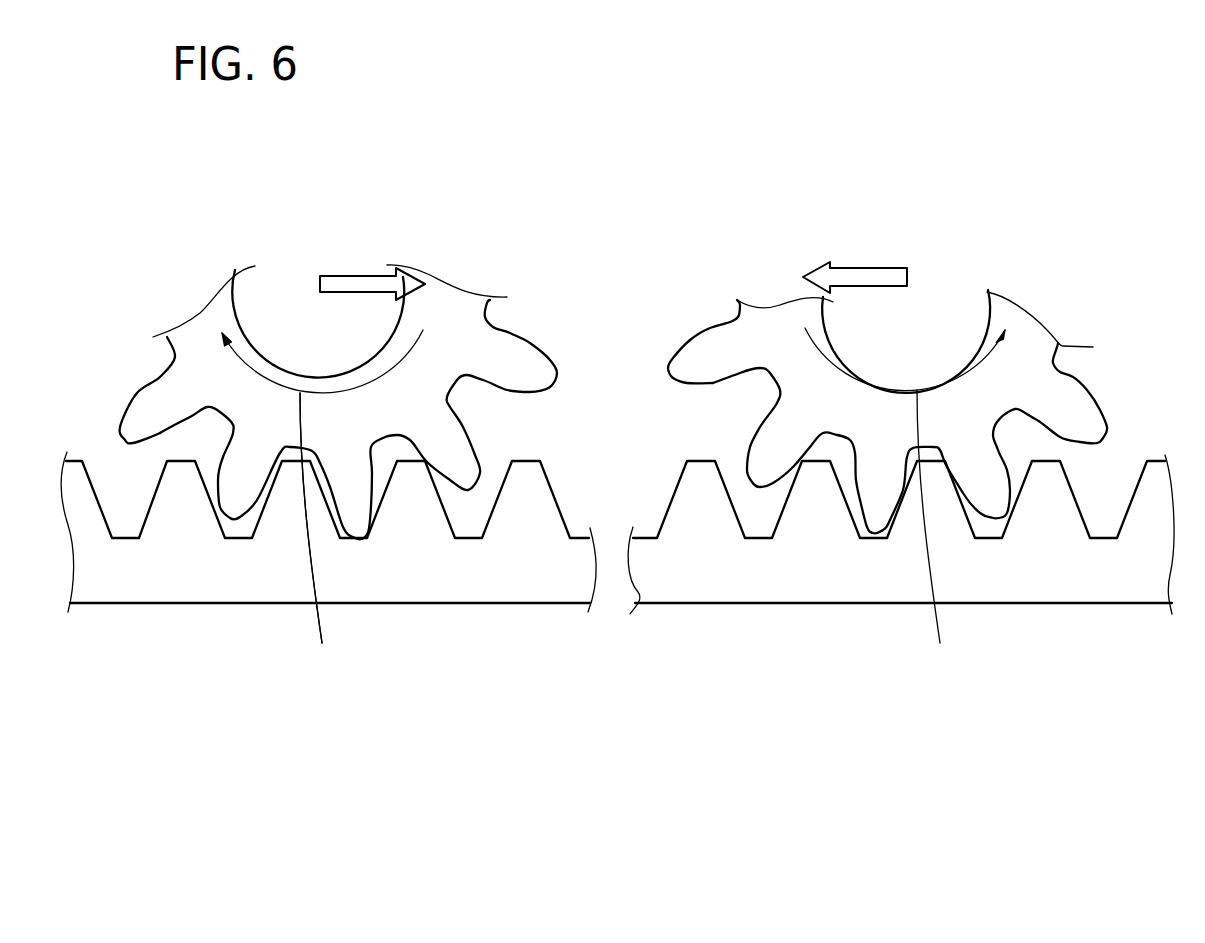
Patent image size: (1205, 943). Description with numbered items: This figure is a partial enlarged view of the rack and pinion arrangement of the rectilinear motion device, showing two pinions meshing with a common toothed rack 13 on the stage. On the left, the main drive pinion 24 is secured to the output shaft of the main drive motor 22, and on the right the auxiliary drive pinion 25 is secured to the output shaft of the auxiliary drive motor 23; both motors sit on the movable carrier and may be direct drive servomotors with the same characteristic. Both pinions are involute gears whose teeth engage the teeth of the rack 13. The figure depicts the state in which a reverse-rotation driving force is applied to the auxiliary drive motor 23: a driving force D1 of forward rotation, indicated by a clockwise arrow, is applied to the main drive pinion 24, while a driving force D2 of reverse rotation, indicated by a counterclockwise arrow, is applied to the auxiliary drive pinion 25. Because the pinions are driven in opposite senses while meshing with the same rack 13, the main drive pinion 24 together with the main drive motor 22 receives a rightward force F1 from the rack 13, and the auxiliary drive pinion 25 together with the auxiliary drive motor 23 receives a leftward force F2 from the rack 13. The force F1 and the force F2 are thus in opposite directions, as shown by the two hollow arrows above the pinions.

The main drive motor 22 is at (305, 270).
The auxiliary drive motor 23 is at (925, 260).
The main drive pinion 24 is at (193, 330).
The auxiliary drive pinion 25 is at (758, 320).
The rack 13 is at (400, 603).
The rightward force F1 is at (362, 273).
The leftward force F2 is at (858, 267).
The driving force of forward rotation D1 is at (316, 536).
The driving force of reverse rotation D2 is at (934, 534).